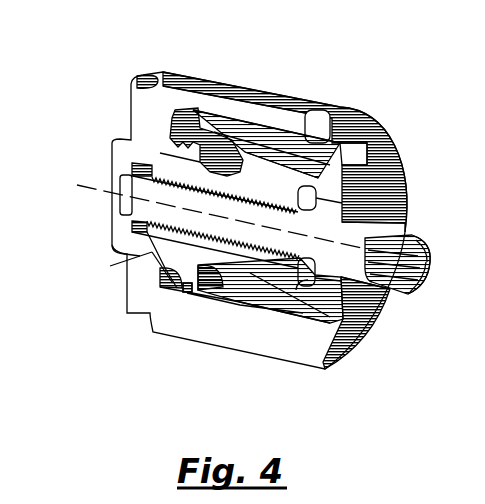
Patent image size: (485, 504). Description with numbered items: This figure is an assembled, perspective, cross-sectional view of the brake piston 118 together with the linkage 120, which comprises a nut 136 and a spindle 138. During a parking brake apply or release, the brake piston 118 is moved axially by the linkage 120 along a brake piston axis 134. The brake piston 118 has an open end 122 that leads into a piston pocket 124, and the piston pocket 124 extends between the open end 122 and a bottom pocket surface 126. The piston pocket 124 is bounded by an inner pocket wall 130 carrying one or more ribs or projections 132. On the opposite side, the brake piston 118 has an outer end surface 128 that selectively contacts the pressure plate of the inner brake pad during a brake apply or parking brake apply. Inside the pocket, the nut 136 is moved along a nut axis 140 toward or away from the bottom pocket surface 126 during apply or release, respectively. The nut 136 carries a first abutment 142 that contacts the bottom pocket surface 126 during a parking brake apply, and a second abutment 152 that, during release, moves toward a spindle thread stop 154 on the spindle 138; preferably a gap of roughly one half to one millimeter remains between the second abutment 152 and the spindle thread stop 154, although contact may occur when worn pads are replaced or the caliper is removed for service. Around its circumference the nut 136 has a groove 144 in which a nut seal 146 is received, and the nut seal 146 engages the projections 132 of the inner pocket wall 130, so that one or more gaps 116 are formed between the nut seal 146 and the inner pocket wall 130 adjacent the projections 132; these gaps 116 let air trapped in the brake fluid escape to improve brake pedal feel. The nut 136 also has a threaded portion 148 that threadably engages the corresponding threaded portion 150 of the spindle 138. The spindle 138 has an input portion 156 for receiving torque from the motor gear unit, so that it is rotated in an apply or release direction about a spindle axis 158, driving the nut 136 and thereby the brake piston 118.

The gaps 116 is at (195, 125).
The brake piston 118 is at (160, 70).
The linkage 120 is at (233, 272).
The open end 122 is at (354, 130).
The piston pocket 124 is at (322, 146).
The bottom pocket surface 126 is at (127, 251).
The outer end surface 128 is at (113, 149).
The inner pocket wall 130 is at (358, 155).
The projections 132 is at (267, 158).
The brake piston axis 134 is at (463, 275).
The nut 136 is at (156, 150).
The spindle 138 is at (420, 236).
The nut axis 140 is at (421, 251).
The first abutment 142 is at (153, 258).
The groove 144 is at (187, 290).
The nut seal 146 is at (187, 287).
The threaded portion 148 is at (252, 252).
The threaded portion 150 is at (155, 217).
The second abutment 152 is at (340, 200).
The spindle thread stop 154 is at (296, 290).
The input portion 156 is at (416, 252).
The spindle axis 158 is at (418, 277).